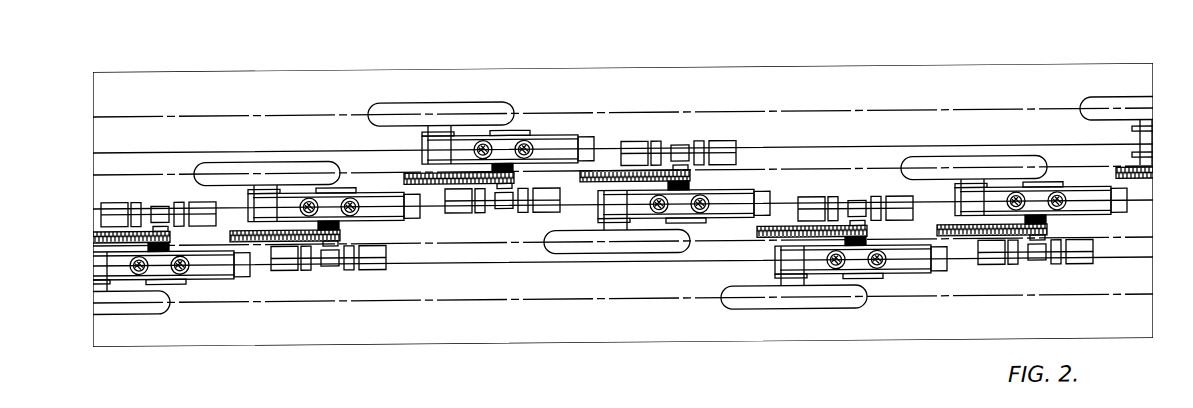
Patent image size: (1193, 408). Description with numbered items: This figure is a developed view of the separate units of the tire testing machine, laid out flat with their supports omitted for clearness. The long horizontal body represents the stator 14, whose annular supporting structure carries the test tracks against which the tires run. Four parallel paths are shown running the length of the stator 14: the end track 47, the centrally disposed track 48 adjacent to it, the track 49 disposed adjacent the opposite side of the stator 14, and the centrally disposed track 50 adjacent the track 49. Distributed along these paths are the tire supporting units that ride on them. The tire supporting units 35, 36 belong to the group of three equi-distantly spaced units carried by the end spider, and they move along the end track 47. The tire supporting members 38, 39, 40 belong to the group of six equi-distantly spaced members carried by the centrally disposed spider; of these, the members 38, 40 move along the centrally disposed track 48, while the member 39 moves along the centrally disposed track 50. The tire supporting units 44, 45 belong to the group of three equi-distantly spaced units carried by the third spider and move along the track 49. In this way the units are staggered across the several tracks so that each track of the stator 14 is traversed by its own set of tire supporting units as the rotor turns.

The stator 14 is at (657, 342).
The tire supporting unit 35 is at (1140, 134).
The tire supporting unit 36 is at (520, 137).
The tire supporting member 38 is at (975, 208).
The tire supporting member 39 is at (670, 202).
The tire supporting member 40 is at (268, 204).
The tire supporting unit 44 is at (868, 285).
The tire supporting unit 45 is at (168, 283).
The end track 47 is at (697, 117).
The centrally disposed track 48 is at (848, 171).
The track 49 is at (690, 303).
The centrally disposed track 50 is at (468, 246).